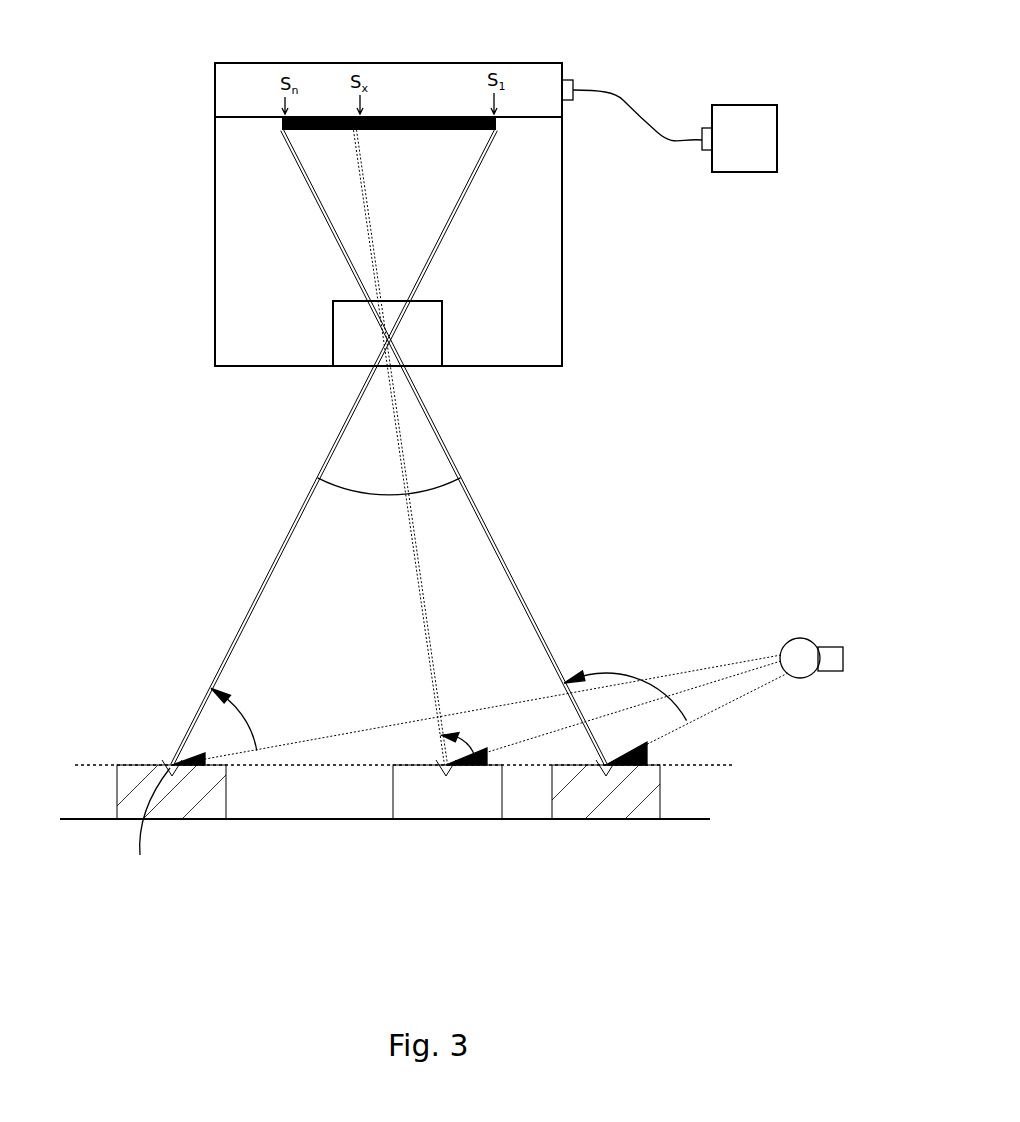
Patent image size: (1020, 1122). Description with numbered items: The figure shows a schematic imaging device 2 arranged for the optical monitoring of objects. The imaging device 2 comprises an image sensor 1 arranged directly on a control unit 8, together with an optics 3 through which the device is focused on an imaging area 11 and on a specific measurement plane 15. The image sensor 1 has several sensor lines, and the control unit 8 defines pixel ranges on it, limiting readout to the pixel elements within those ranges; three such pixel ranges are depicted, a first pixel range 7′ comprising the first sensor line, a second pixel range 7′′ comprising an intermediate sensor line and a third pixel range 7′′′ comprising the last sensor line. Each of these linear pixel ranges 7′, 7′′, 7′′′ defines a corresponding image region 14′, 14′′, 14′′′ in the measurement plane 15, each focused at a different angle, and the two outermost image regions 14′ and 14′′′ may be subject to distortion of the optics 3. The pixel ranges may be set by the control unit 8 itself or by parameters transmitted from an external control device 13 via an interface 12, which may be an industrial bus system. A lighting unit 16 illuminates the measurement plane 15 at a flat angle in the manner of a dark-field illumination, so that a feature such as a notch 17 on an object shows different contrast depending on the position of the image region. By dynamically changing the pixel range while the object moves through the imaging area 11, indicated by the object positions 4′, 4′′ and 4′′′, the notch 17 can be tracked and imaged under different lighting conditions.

The image sensor 1 is at (282, 119).
The imaging device 2 is at (565, 252).
The optics 3 is at (427, 342).
The object position 4′ is at (225, 790).
The object position 4′′ is at (405, 795).
The object position 4′′′ is at (647, 797).
The first pixel range 7′ is at (498, 143).
The second pixel range 7′′ is at (361, 143).
The third pixel range 7′′′ is at (287, 140).
The control unit 8 is at (537, 78).
The imaging area 11 is at (443, 480).
The interface 12 is at (625, 100).
The external control device 13 is at (763, 143).
The first image region 14′ is at (172, 762).
The second image region 14′′ is at (455, 749).
The third image region 14′′′ is at (600, 753).
The measurement plane 15 is at (737, 765).
The lighting unit 16 is at (828, 645).
The notch 17 is at (141, 834).